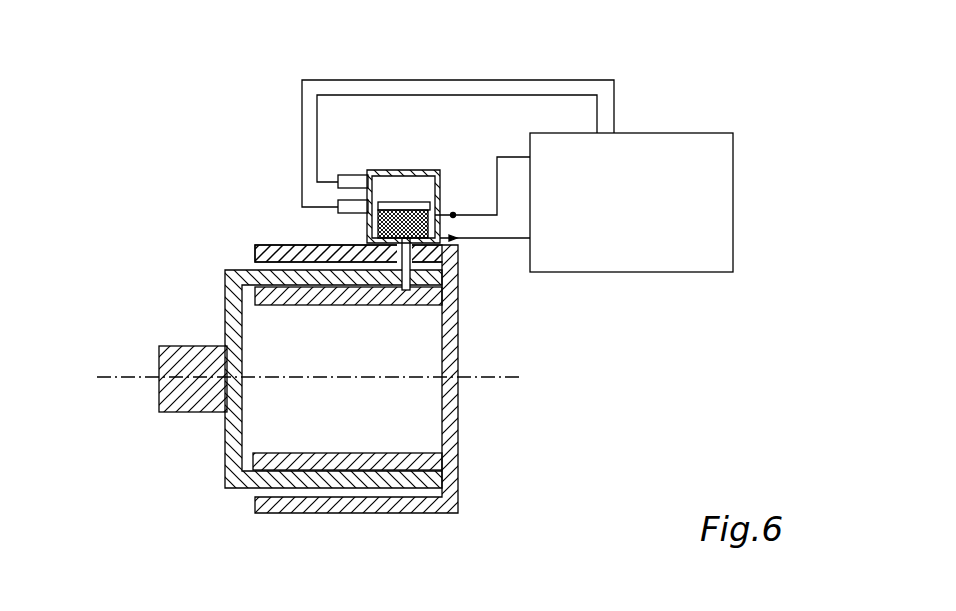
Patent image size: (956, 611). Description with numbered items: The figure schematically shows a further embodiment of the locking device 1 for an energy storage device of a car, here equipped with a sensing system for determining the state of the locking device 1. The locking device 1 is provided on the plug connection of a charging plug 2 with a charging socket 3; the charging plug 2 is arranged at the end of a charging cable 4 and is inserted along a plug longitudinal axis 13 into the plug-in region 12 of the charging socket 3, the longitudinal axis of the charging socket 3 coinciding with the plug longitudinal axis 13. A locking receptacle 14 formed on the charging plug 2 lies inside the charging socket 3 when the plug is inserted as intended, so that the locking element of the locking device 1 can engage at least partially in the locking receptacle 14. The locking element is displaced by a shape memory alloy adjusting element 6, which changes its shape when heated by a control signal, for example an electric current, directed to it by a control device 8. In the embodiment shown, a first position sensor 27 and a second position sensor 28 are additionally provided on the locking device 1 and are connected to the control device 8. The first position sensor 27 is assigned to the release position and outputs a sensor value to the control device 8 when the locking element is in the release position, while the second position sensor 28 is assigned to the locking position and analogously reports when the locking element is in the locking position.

The locking device 1 is at (416, 166).
The charging plug 2 is at (226, 487).
The charging socket 3 is at (460, 441).
The charging cable 4 is at (197, 346).
The shape memory alloy adjusting element 6 is at (376, 228).
The control device 8 is at (639, 208).
The plug-in region 12 is at (262, 262).
The plug longitudinal axis 13 is at (118, 374).
The locking receptacle 14 is at (396, 289).
The first position sensor 27 is at (350, 176).
The second position sensor 28 is at (350, 204).